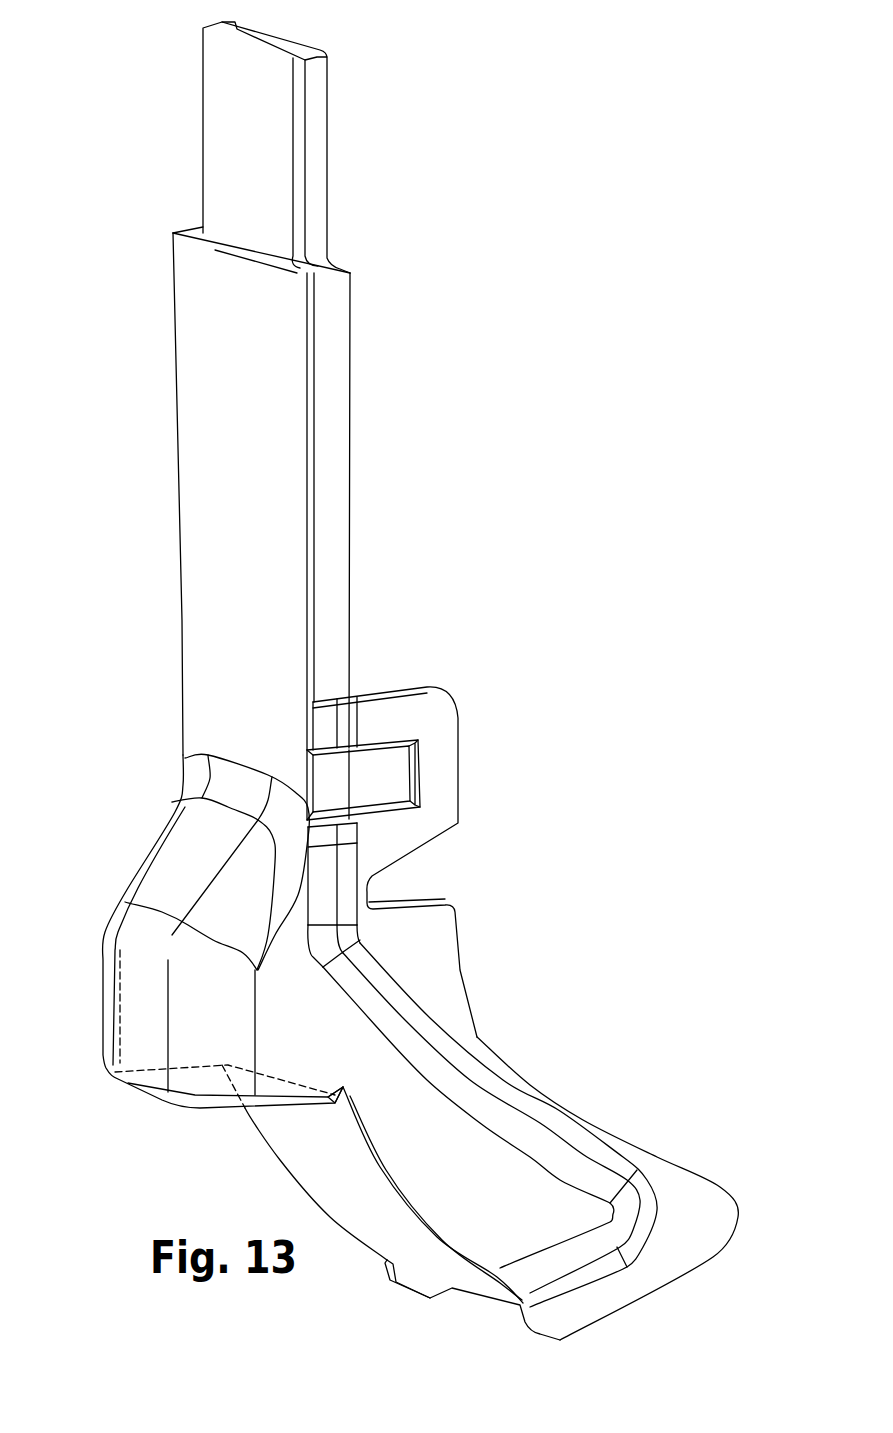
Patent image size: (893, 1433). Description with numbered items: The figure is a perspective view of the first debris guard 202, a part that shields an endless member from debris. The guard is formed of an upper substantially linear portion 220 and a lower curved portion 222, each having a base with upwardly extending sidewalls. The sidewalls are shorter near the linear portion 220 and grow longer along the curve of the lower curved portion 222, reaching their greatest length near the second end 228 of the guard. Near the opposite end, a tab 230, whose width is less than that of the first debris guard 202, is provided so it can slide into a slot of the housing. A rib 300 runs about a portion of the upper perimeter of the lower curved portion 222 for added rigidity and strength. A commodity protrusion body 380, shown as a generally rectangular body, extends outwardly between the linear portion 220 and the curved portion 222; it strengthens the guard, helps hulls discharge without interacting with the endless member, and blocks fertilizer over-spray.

The first debris guard 202 is at (163, 238).
The upper substantially linear portion 220 is at (210, 477).
The tab 230 is at (432, 710).
The commodity protrusion body 380 is at (187, 1017).
The rib 300 is at (537, 1098).
The lower curved portion 222 is at (488, 1192).
The second end 228 is at (660, 1232).